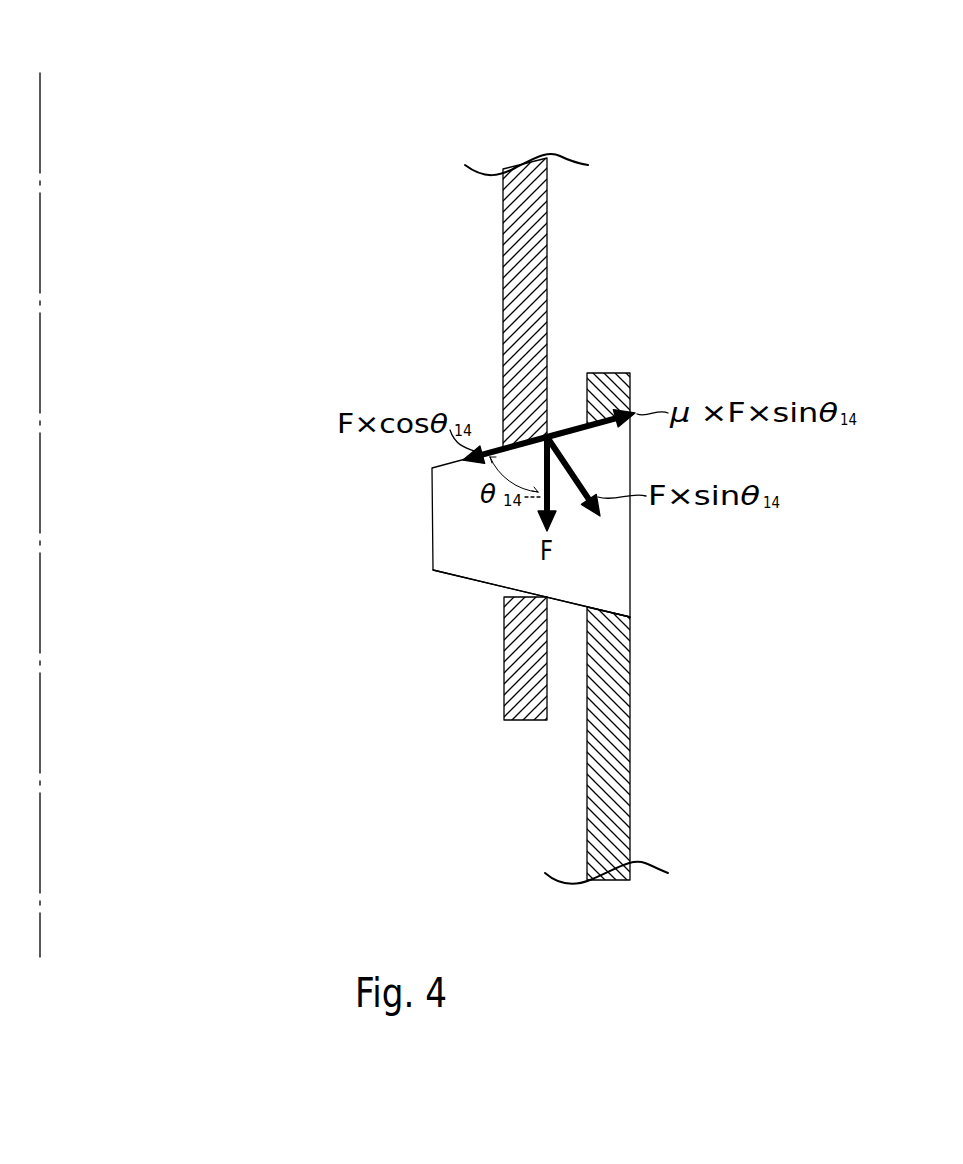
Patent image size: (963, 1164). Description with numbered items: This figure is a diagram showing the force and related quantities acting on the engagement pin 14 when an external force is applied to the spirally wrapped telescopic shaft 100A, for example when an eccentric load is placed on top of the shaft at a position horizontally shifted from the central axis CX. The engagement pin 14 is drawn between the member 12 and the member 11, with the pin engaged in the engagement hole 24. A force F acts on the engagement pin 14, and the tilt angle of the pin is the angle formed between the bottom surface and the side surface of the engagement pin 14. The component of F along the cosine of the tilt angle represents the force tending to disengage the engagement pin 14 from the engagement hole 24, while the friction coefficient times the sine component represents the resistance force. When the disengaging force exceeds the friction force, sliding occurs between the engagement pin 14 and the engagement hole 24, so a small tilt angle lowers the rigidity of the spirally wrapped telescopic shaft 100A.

The central axis CX is at (40, 73).
The spirally wrapped telescopic shaft 100A is at (648, 274).
The first member / outer member 11 is at (632, 774).
The second member / shaft 12 is at (503, 263).
The engagement pin 14 is at (432, 505).
The engagement hole 24 is at (518, 596).